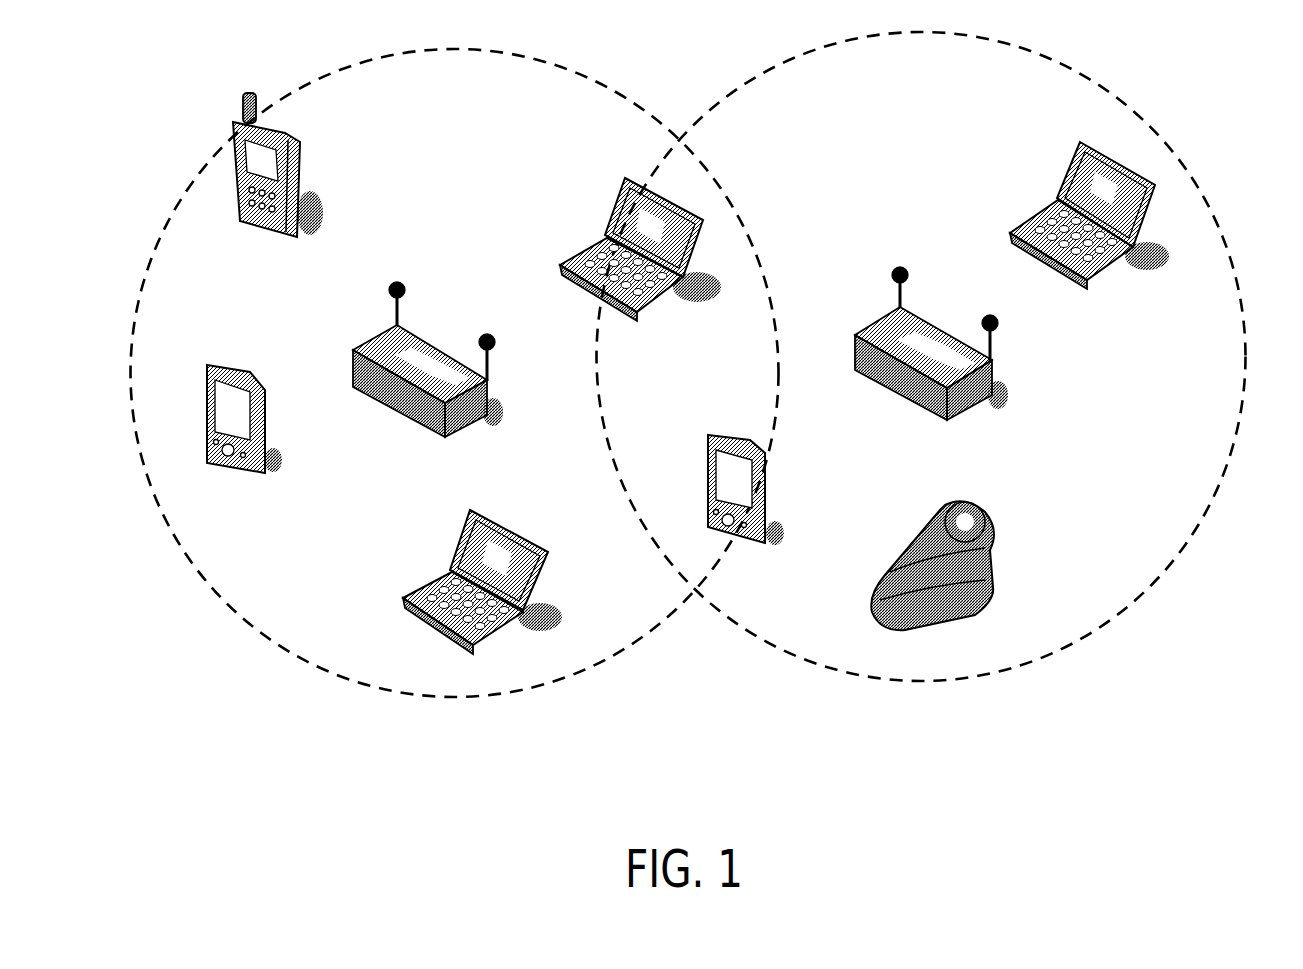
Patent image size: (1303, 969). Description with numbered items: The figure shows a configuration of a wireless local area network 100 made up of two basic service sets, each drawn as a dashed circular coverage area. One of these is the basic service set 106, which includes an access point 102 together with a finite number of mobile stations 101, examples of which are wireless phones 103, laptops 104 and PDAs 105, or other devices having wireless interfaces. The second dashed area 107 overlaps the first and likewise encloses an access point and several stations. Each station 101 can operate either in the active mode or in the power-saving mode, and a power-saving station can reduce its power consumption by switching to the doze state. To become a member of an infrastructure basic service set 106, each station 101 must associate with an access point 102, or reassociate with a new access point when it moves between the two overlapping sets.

The wireless local area network 100 is at (271, 738).
The mobile stations 101 is at (688, 373).
The access point 102 is at (987, 413).
The wireless phones 103 is at (316, 180).
The laptops 104 is at (1056, 171).
The PDAs 105 is at (269, 471).
The basic service set 106 is at (1167, 587).
The coverage area of first network 107 is at (599, 676).